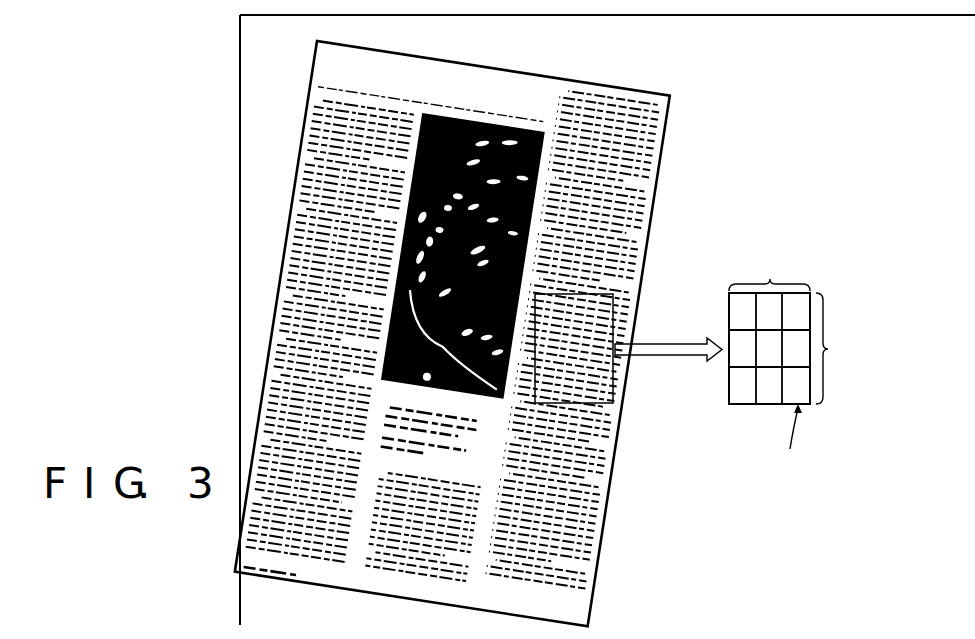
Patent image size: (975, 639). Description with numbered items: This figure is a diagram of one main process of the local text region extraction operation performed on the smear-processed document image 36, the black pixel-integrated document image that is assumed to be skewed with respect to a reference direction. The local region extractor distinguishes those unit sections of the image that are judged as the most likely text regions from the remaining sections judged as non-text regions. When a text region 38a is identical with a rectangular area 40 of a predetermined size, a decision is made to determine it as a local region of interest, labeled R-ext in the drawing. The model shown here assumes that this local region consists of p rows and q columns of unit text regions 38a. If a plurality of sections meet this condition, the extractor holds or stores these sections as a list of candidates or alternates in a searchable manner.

The smear-processed document image 36 is at (656, 233).
The rectangular area 40 is at (617, 404).
The unit text region 38a is at (740, 394).